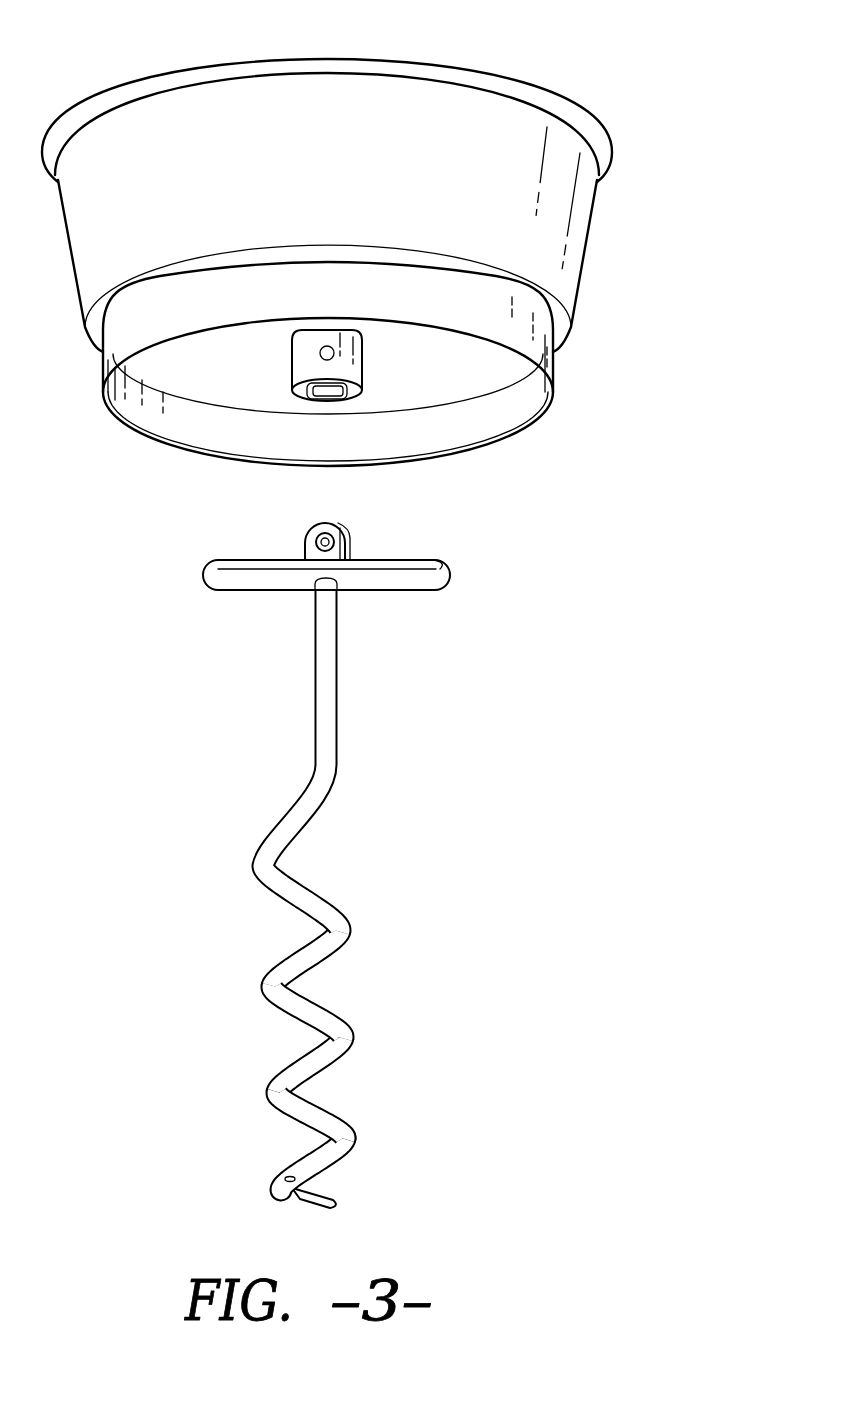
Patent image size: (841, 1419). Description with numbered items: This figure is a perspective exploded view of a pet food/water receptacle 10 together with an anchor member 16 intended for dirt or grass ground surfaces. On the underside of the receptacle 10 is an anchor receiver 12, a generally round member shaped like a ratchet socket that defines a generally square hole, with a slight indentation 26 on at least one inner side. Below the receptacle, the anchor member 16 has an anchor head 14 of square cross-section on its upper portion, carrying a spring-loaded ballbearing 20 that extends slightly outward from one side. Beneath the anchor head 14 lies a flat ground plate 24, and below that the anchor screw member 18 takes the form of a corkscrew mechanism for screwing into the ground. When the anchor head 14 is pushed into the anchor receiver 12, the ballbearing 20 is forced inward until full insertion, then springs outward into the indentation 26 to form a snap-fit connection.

The pet food/water receptacle 10 is at (450, 117).
The anchor receiver 12 is at (365, 366).
The anchor head 14 is at (352, 548).
The anchor member 16 is at (352, 899).
The anchor screw member 18 is at (352, 922).
The spring-loaded ballbearing 20 is at (313, 542).
The flat ground plate 24 is at (405, 578).
The indentation 26 is at (320, 354).